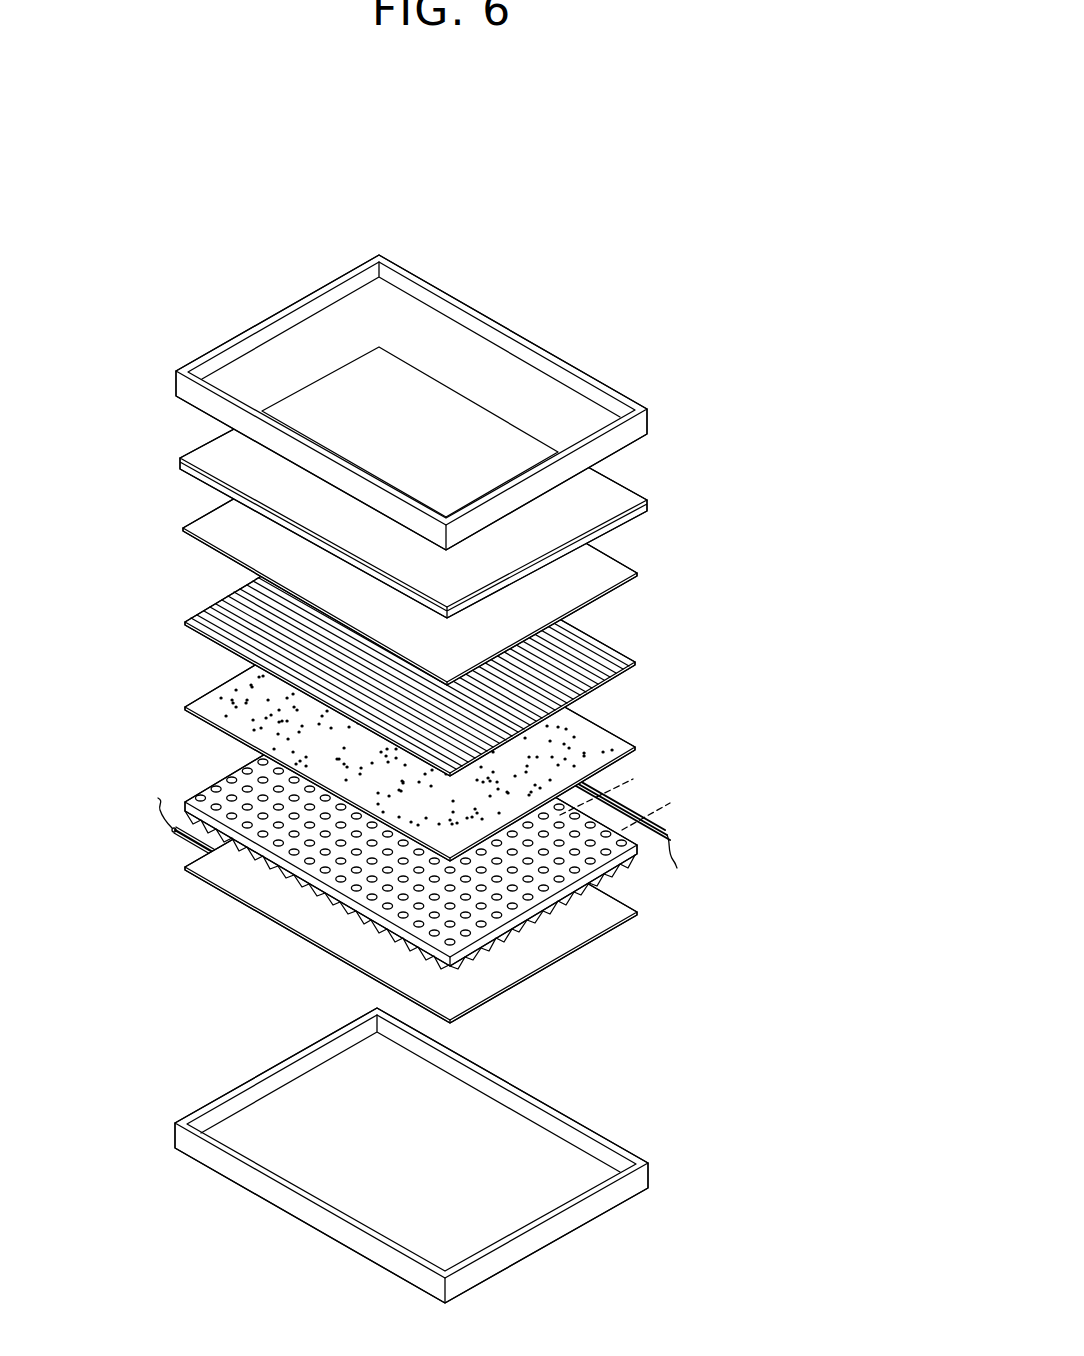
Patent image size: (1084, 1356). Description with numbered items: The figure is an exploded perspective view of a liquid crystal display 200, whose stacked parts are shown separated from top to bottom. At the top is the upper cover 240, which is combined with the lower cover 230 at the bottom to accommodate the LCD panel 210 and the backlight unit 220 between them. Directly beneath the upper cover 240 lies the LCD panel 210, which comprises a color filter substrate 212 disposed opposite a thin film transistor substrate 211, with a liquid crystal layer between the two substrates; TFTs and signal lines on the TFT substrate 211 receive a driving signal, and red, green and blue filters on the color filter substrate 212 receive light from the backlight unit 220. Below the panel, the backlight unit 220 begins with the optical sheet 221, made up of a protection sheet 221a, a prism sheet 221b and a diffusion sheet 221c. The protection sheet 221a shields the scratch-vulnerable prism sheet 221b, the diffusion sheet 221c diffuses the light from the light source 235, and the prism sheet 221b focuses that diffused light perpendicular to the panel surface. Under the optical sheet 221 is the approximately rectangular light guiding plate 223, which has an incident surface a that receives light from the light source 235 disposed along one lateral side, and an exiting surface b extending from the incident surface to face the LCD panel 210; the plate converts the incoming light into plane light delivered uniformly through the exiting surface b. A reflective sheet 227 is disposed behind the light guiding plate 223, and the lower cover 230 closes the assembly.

The liquid crystal display 200 is at (628, 276).
The upper cover 240 is at (650, 410).
The LCD panel 210 is at (523, 484).
The color filter substrate 212 is at (620, 486).
The thin film transistor substrate 211 is at (648, 506).
The backlight unit 220 is at (525, 738).
The optical sheet 221 is at (493, 640).
The protection sheet 221a is at (462, 552).
The prism sheet 221b is at (638, 663).
The diffusion sheet 221c is at (638, 749).
The light guiding plate 223 is at (494, 874).
The reflective sheet 227 is at (640, 912).
The light source 235 is at (170, 830).
The lower cover 230 is at (633, 1184).
The incident surface a is at (440, 962).
The exiting surface b is at (483, 912).